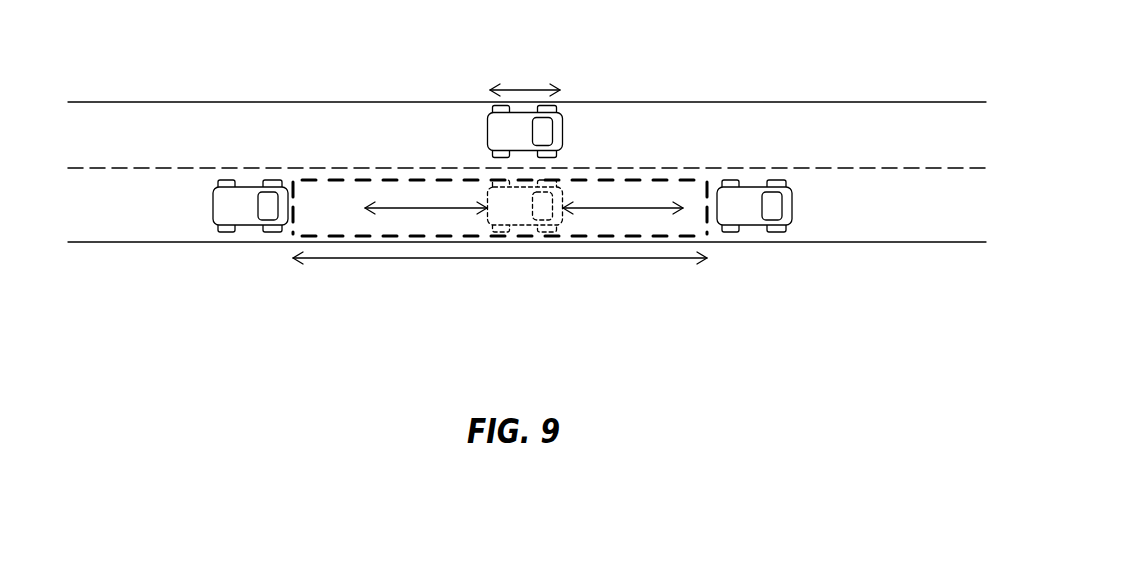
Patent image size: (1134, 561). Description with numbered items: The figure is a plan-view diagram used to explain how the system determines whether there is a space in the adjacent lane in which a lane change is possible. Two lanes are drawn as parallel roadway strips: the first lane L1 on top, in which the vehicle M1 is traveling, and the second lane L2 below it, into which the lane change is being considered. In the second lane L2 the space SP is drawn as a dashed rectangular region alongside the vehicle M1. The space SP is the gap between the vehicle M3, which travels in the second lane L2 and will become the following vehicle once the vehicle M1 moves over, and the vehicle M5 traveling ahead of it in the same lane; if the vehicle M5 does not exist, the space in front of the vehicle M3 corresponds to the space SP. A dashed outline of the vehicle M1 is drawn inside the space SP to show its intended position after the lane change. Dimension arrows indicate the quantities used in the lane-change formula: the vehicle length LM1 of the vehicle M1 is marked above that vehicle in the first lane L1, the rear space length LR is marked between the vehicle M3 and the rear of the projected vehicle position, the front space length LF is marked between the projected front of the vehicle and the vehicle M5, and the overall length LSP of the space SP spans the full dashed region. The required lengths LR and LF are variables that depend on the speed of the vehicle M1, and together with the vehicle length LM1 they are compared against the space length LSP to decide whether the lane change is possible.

The first lane L1 is at (102, 117).
The second lane L2 is at (112, 230).
The vehicle M1 is at (527, 107).
The vehicle M3 is at (255, 225).
The vehicle M5 is at (745, 225).
The space SP is at (368, 240).
The vehicle length of the vehicle M1 LM1 is at (515, 90).
The length of a rear space required for lane change LR is at (436, 208).
The length of a front space required for lane change LF is at (617, 208).
The length of the space SP LSP is at (527, 258).